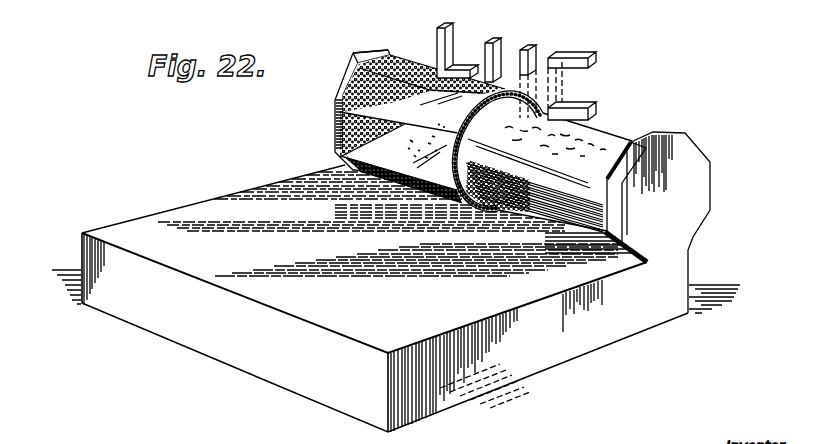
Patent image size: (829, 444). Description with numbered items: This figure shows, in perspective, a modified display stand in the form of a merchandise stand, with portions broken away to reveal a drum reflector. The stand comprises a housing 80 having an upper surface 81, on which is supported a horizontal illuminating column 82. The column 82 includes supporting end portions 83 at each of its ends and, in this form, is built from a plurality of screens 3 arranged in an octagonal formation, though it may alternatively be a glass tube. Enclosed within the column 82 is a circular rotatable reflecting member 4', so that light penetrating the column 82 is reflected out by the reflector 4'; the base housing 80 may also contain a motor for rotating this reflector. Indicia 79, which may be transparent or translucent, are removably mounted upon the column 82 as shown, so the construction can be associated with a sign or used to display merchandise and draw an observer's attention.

The screens 3 is at (347, 120).
The circular rotatable reflecting member 4' is at (541, 169).
The indicia 79 is at (492, 87).
The housing 80 is at (593, 336).
The upper surface 81 is at (397, 224).
The horizontal illuminating column 82 is at (329, 82).
The supporting end portions 83 is at (685, 156).